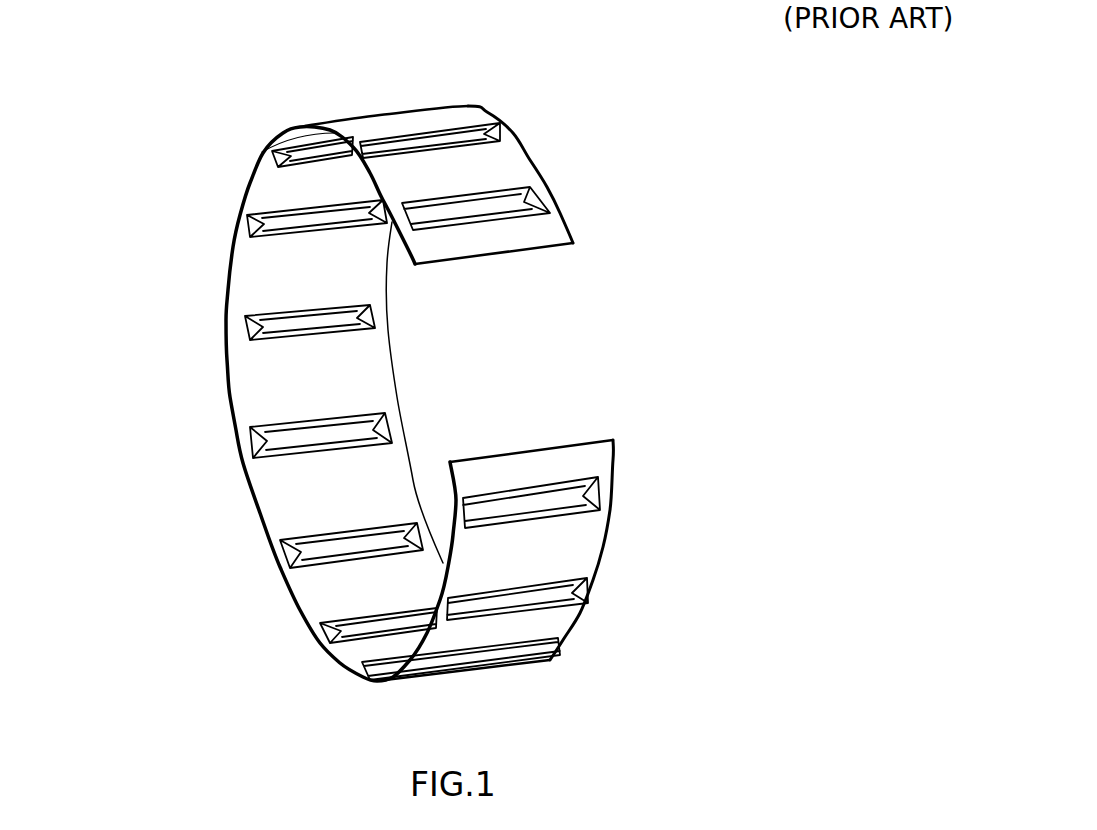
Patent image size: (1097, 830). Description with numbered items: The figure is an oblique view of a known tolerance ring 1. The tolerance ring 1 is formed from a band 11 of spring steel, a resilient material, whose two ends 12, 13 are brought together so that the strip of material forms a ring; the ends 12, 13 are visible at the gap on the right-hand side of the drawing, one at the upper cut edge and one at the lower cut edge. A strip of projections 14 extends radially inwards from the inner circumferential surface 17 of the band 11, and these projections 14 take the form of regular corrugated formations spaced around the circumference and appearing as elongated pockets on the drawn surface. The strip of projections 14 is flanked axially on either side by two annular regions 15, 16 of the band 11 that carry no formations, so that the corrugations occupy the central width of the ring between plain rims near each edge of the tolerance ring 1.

The tolerance ring 1 is at (413, 349).
The band 11 is at (562, 203).
The end of the band 12 is at (580, 240).
The end of the band 13 is at (615, 437).
The projections 14 is at (530, 608).
The annular region 15 is at (520, 147).
The annular region 16 is at (352, 145).
The inner circumferential surface 17 is at (263, 277).